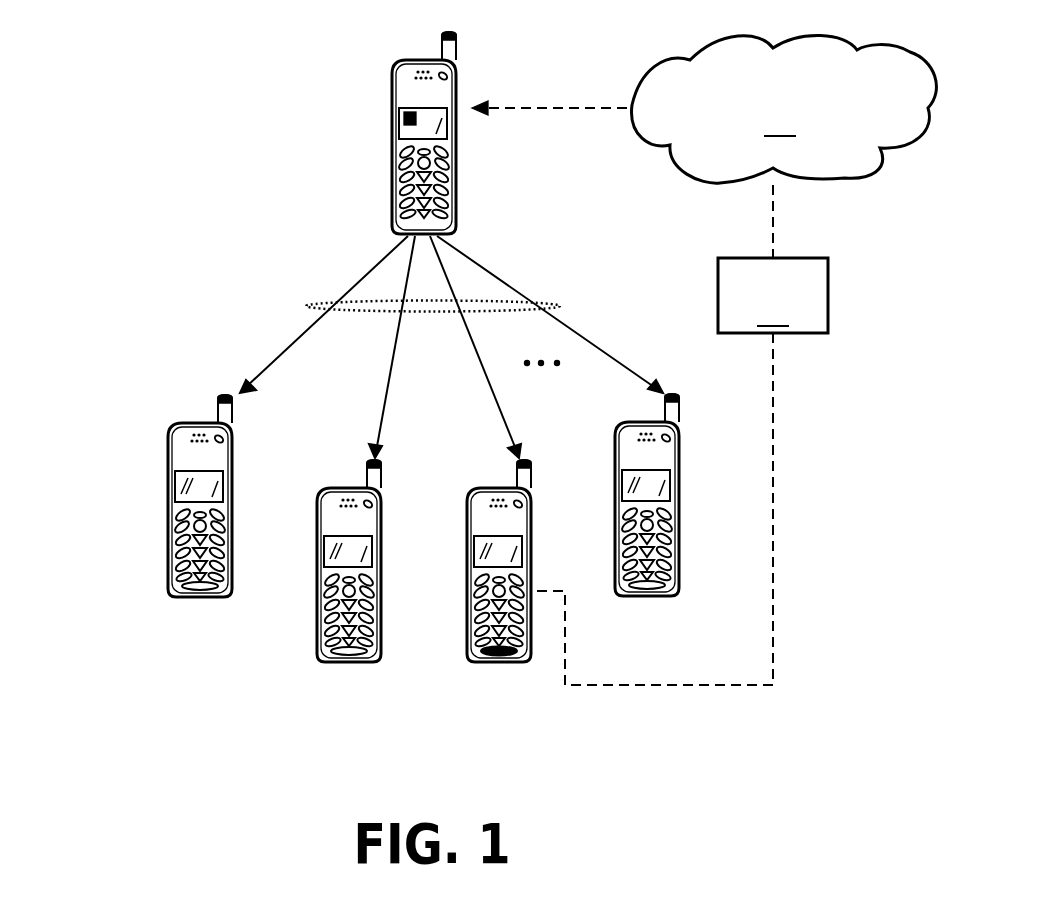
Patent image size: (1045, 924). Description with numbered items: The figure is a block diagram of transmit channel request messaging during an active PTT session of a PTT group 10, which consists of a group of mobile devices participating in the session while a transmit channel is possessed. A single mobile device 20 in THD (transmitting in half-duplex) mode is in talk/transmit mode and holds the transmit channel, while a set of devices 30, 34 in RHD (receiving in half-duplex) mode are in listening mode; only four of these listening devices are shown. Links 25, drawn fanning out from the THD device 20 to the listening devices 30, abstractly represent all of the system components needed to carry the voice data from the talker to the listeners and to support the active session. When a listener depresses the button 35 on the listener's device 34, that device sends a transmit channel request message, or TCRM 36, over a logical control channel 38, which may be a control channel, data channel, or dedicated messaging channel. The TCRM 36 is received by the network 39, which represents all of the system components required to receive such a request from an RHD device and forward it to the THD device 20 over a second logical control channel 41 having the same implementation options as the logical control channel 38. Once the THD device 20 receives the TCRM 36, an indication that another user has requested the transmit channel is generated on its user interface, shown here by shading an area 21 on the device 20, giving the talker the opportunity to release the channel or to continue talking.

The PTT group 10 is at (157, 60).
The mobile device in THD mode 20 is at (382, 133).
The shaded area 21 is at (408, 118).
The links 25 is at (327, 302).
The devices in RHD mode 30 is at (430, 561).
The listener's device 34 is at (495, 662).
The button 35 is at (483, 594).
The transmit channel request message (TCRM) 36 is at (681, 471).
The logical control channel 38 is at (773, 206).
The network 39 is at (784, 109).
The logical control channel 41 is at (560, 106).